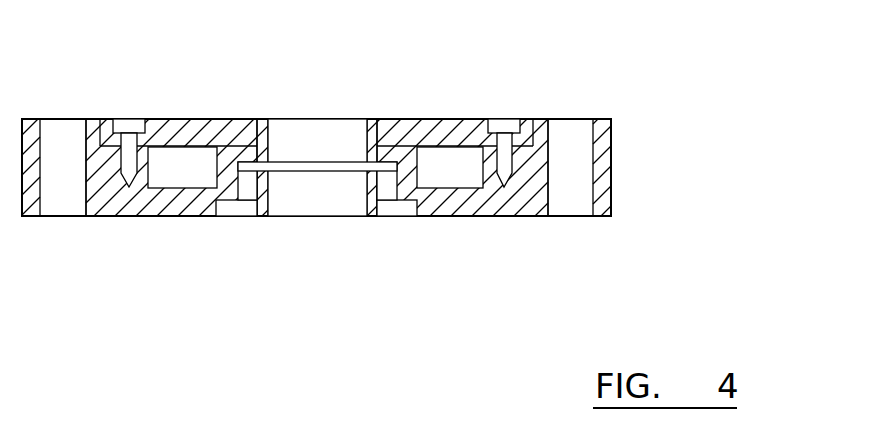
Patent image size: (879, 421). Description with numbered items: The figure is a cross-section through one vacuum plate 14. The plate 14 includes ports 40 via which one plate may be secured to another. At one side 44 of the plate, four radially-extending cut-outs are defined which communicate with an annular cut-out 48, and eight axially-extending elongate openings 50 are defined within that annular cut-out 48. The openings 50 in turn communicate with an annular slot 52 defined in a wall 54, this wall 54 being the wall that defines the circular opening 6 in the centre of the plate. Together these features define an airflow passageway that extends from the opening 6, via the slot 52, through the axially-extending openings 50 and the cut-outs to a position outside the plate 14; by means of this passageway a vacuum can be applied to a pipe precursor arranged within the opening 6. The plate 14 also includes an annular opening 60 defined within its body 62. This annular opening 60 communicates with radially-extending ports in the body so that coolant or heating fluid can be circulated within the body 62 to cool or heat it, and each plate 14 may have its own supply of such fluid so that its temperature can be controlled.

The vacuum plate 14 is at (613, 164).
The ports 40 is at (57, 119).
The side 44 is at (118, 216).
The body 62 is at (528, 177).
The annular opening 60 is at (187, 174).
The axially-extending elongate openings 50 is at (247, 188).
The annular cut-out 48 is at (314, 171).
The annular slot 52 is at (290, 160).
The wall 54 is at (367, 143).
The opening 6 is at (323, 143).